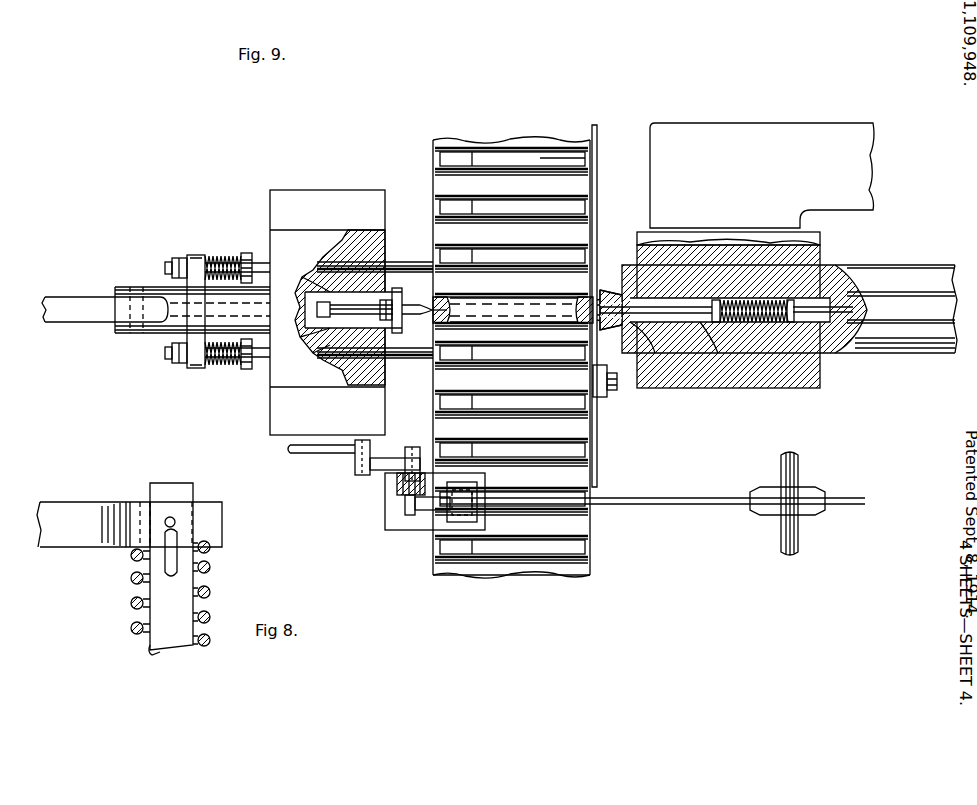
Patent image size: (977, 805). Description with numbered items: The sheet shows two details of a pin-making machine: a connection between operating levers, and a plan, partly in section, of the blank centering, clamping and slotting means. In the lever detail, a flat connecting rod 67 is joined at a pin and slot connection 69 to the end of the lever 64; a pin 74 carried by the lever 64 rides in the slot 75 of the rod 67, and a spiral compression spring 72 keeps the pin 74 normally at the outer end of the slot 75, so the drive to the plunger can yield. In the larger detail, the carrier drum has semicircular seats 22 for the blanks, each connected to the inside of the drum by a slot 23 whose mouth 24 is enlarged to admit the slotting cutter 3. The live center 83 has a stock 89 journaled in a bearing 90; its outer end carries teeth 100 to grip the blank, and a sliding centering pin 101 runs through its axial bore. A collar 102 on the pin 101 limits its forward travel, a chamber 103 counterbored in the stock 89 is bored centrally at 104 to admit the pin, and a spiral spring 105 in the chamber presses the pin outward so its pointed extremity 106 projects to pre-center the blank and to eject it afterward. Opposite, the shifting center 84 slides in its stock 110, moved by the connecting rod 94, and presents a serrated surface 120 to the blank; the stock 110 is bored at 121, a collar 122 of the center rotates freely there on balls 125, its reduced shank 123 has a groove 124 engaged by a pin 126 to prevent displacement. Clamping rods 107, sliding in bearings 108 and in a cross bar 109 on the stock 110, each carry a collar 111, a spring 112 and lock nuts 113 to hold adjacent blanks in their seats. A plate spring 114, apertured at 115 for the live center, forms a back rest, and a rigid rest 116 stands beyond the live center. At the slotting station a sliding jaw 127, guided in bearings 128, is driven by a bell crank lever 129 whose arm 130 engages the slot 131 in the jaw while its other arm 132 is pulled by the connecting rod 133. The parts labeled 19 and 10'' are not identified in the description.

In FIG. 9, the slotting cutter 3 is at (685, 498).
In FIG. 9, the frame 19 is at (545, 576).
In FIG. 9, the seats 22 is at (434, 162).
In FIG. 9, the slot 23 is at (492, 152).
In FIG. 9, the mouths 24 is at (583, 160).
In FIG. 8, the lever 64 is at (54, 501).
In FIG. 8, the connecting rod 67 is at (158, 490).
In FIG. 8, the pin and slot connection 69 is at (185, 501).
In FIG. 8, the spring 72 is at (122, 600).
In FIG. 8, the pin 74 is at (176, 522).
In FIG. 8, the slot 75 is at (178, 560).
In FIG. 9, the live center 83 is at (660, 323).
In FIG. 9, the shifting center 84 is at (440, 299).
In FIG. 9, the stock 89 is at (830, 268).
In FIG. 9, the bearing 90 is at (775, 128).
In FIG. 9, the connecting rod 94 is at (85, 323).
In FIG. 9, the teeth 100 is at (599, 290).
In FIG. 9, the centering pin 101 is at (653, 372).
In FIG. 9, the collar 102 is at (726, 323).
In FIG. 9, the chamber 103 is at (760, 323).
In FIG. 9, the bore 104 is at (862, 292).
In FIG. 9, the spring 105 is at (818, 366).
In FIG. 9, the pointed extremity 106 is at (583, 314).
In FIG. 9, the clamping rods 107 is at (406, 358).
In FIG. 9, the bearings 108 is at (292, 250).
In FIG. 9, the cross bar 109 is at (193, 255).
In FIG. 9, the stock 110 is at (175, 283).
In FIG. 9, the collar 111 is at (246, 370).
In FIG. 9, the spring 112 is at (222, 367).
In FIG. 9, the lock nuts 113 is at (173, 365).
In FIG. 9, the plate spring 114 is at (596, 242).
In FIG. 9, the aperture 115 is at (600, 322).
In FIG. 9, the rigid rest 116 is at (600, 396).
In FIG. 9, the serrated surface 120 is at (447, 318).
In FIG. 9, the bore 121 is at (300, 390).
In FIG. 9, the collar 122 is at (400, 316).
In FIG. 9, the shank 123 is at (396, 330).
In FIG. 9, the groove 124 is at (325, 338).
In FIG. 9, the balls 125 is at (395, 302).
In FIG. 9, the pin 126 is at (298, 280).
In FIG. 9, the sliding jaw 127 is at (470, 500).
In FIG. 9, the bearings 128 is at (425, 522).
In FIG. 9, the bell crank lever 129 is at (398, 487).
In FIG. 9, the arm 130 is at (420, 505).
In FIG. 9, the slot 131 is at (463, 516).
In FIG. 9, the arm 132 is at (354, 465).
In FIG. 9, the connecting rod 133 is at (304, 452).
In FIG. 9, the rail 10'' is at (375, 250).